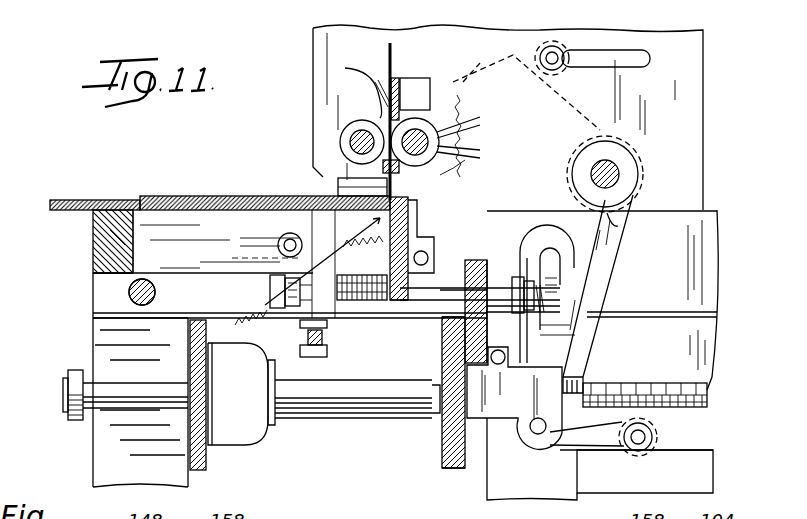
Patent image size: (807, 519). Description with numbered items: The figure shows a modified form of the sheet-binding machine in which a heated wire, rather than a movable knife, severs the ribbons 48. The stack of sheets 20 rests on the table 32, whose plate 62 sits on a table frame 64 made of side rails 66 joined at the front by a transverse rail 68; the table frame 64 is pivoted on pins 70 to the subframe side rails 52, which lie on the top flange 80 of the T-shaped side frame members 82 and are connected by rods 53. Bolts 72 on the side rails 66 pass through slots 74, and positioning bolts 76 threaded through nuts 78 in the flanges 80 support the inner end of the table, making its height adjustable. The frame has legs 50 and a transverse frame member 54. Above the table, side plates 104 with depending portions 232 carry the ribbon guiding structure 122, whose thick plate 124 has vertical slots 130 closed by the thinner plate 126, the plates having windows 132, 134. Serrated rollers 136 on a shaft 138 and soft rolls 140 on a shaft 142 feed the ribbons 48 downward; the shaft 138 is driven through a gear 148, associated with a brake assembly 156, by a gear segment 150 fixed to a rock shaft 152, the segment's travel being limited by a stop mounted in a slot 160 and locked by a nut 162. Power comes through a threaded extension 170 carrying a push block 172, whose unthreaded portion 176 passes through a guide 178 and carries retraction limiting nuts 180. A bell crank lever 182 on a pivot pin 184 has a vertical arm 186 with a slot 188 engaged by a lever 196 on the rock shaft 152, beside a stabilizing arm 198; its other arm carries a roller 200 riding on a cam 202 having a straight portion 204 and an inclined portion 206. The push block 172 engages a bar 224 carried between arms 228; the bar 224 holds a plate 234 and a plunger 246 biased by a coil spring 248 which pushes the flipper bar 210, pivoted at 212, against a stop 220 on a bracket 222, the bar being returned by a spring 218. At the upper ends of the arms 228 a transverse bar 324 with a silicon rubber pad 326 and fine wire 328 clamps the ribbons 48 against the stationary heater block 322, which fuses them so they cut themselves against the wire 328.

The sheets 20 is at (157, 230).
The table 32 is at (82, 193).
The table frame 64 is at (84, 223).
The pins 70 is at (95, 236).
The transverse rail 68 is at (100, 262).
The side rails 52 is at (93, 305).
The top flange 80 is at (115, 320).
The rods 53 is at (128, 291).
The side rails 66 is at (165, 270).
The plate 62 is at (172, 212).
The bolts 72 is at (265, 240).
The slots 74 is at (250, 258).
The bracket 222 is at (325, 225).
The legs 50 is at (97, 450).
The transverse frame member 54 is at (198, 425).
The retraction limiting nuts 180 is at (63, 376).
The unthreaded portion 176 is at (140, 382).
The guide 178 is at (230, 440).
The side frame members 82 is at (303, 391).
The stop 220 is at (272, 282).
The spring 218 is at (262, 304).
The nuts 78 is at (300, 324).
The positioning bolts 76 is at (325, 353).
The wire 328 is at (410, 222).
The pivot 212 is at (434, 256).
The flipper bar 210 is at (393, 290).
The plunger 246 is at (440, 318).
The plate 234 is at (520, 262).
The coil spring 248 is at (537, 322).
The bar 224 is at (447, 455).
The arms 228 is at (435, 447).
The side plates 104 is at (320, 42).
The ribbons 48 is at (387, 62).
The plate 124 is at (413, 111).
The guiding structure 122 is at (400, 67).
The gear 148 is at (460, 113).
The plate 126 is at (380, 96).
The slots 130 is at (345, 68).
The soft rolls 140 is at (341, 148).
The shaft 142 is at (350, 143).
The windows 134 is at (383, 130).
The serrated rollers 136 is at (445, 135).
The windows 132 is at (440, 118).
The shaft 138 is at (445, 125).
The silicon rubber pad 326 is at (450, 142).
The transverse bar 324 is at (465, 160).
The block 322 is at (336, 186).
The gear segment 150 is at (605, 100).
The brake assembly 156 is at (548, 46).
The nut 162 is at (548, 42).
The slot 160 is at (618, 50).
The rock shaft 152 is at (620, 165).
The bell crank lever 182 is at (590, 357).
The lever 196 is at (600, 250).
The stabilizing arm 198 is at (620, 228).
The slot 188 is at (590, 290).
The arm 186 is at (575, 330).
The threaded extension 170 is at (684, 382).
The push block 172 is at (528, 395).
The pivot pin 184 is at (538, 435).
The depending portions 232 is at (532, 496).
The inclined portion 206 is at (625, 450).
The roller 200 is at (654, 437).
The cam 202 is at (713, 456).
The straight portion 204 is at (698, 452).